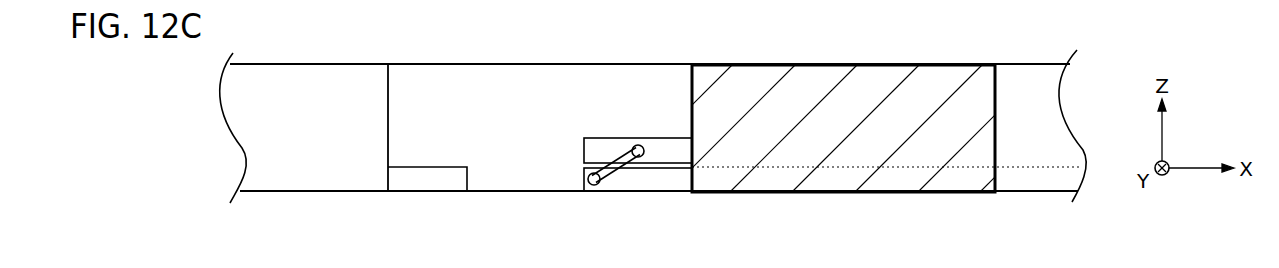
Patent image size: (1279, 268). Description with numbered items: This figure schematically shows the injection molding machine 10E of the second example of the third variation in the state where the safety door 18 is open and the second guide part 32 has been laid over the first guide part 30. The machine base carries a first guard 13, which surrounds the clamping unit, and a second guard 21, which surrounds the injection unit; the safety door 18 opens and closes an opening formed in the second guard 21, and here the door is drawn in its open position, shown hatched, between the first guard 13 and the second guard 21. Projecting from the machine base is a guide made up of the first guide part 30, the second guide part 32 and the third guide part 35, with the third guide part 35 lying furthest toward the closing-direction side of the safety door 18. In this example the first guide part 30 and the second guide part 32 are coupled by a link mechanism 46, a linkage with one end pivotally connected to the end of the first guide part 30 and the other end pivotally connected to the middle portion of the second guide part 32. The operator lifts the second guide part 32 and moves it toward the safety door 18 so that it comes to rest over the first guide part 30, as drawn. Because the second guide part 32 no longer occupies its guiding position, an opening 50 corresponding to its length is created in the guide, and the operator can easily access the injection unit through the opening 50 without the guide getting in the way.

The first guard 13 is at (293, 178).
The second guard 21 is at (1043, 178).
The third guide part 35 is at (415, 178).
The opening 50 is at (517, 174).
The second guide part 32 is at (608, 150).
The first guide part 30 is at (630, 177).
The link mechanism 46 is at (604, 166).
The safety door 18 is at (723, 80).
The injection molding machine 10E is at (837, 51).